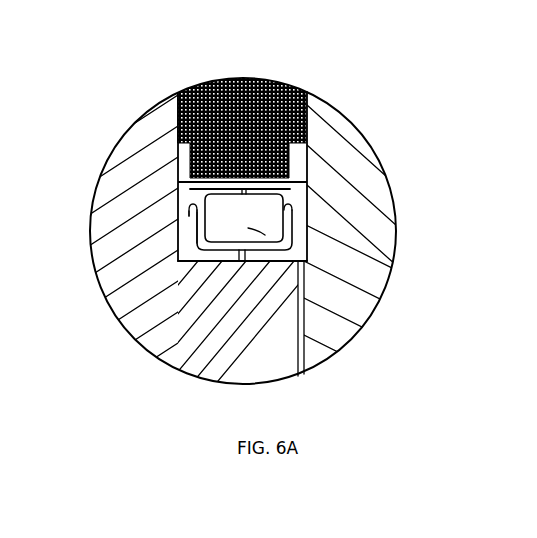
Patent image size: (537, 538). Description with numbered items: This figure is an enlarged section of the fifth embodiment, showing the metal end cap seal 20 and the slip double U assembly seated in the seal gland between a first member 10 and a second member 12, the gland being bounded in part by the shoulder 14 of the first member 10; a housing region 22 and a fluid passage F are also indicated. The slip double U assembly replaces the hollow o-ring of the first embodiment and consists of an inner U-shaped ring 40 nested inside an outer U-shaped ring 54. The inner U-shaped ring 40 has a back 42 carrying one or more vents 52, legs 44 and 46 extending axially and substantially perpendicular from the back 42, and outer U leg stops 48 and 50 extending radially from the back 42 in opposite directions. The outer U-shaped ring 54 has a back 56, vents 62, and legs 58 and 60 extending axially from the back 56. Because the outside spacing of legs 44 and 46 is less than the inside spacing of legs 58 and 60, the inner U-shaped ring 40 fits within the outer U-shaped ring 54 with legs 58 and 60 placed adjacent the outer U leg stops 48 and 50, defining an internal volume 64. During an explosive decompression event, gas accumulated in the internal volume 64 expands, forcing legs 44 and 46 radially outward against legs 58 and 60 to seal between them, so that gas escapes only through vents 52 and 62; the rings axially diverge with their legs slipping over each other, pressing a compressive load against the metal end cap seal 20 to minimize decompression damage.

The first member 10 is at (112, 208).
The second member 12 is at (378, 233).
The shoulder 14 is at (185, 305).
The metal end cap seal 20 is at (203, 82).
The housing 22 is at (292, 167).
The inner U-shaped ring 40 is at (168, 187).
The back 42 is at (222, 190).
The leg 44 is at (186, 219).
The leg 46 is at (290, 222).
The outer U leg stop 48 is at (186, 212).
The outer U leg stop 50 is at (300, 191).
The vent 52 is at (186, 204).
The outer U-shaped ring 54 is at (205, 338).
The back 56 is at (306, 266).
The leg 58 is at (178, 236).
The leg 60 is at (270, 235).
The vent 62 is at (233, 233).
The internal volume 64 is at (216, 272).
The fluid passage F is at (301, 378).